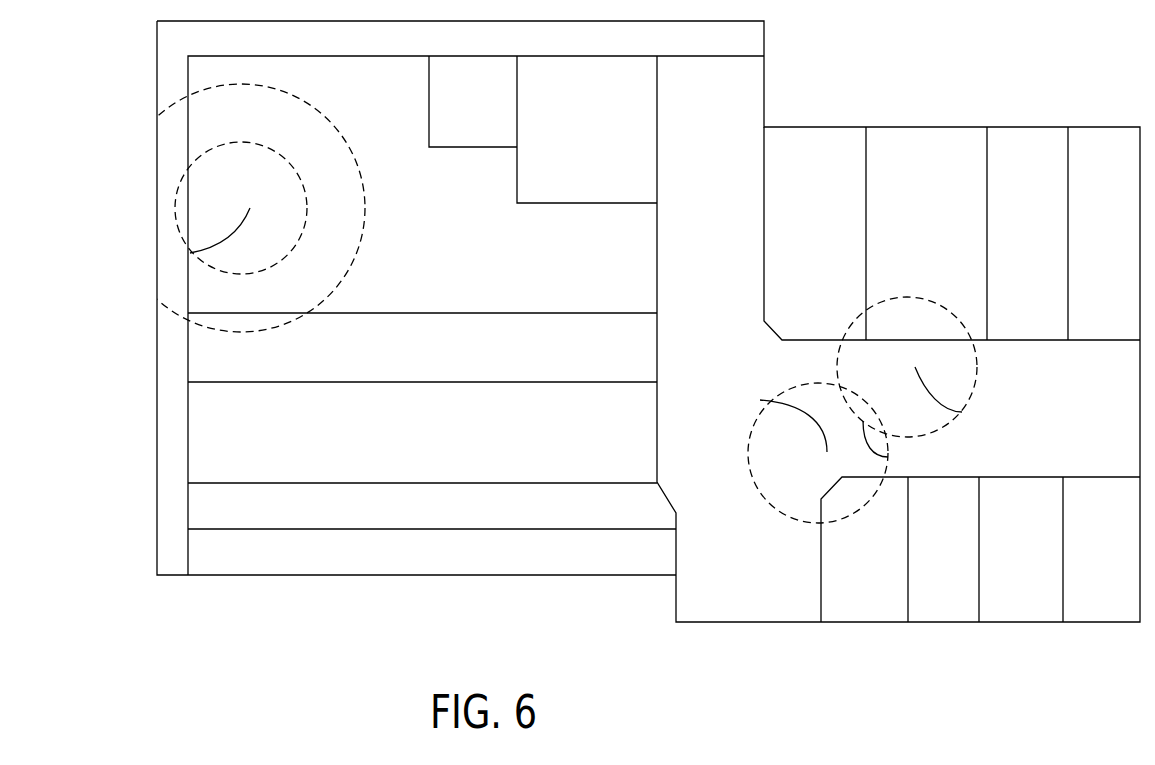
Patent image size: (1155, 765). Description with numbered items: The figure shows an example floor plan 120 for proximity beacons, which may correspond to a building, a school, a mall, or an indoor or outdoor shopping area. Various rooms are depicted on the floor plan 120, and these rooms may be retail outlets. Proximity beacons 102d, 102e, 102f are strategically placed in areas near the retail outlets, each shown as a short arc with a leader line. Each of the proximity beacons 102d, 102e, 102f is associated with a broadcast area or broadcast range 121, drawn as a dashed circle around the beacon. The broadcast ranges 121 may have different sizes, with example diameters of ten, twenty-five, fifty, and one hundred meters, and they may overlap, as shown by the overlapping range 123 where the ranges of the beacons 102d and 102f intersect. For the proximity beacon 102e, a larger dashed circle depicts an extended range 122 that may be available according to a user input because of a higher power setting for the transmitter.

The floor plan 120 is at (83, 68).
The broadcast range 121 is at (226, 142).
The extended range 122 is at (316, 108).
The overlapping range 123 is at (888, 457).
The proximity beacon 102d is at (962, 412).
The proximity beacon 102e is at (190, 253).
The proximity beacon 102f is at (760, 400).